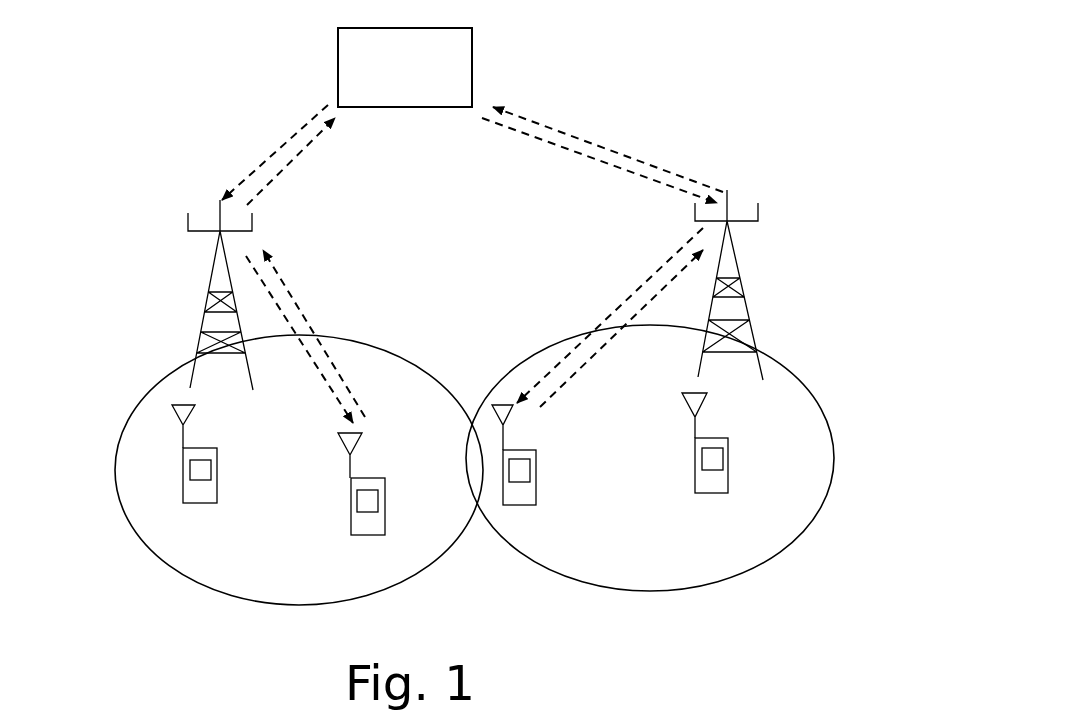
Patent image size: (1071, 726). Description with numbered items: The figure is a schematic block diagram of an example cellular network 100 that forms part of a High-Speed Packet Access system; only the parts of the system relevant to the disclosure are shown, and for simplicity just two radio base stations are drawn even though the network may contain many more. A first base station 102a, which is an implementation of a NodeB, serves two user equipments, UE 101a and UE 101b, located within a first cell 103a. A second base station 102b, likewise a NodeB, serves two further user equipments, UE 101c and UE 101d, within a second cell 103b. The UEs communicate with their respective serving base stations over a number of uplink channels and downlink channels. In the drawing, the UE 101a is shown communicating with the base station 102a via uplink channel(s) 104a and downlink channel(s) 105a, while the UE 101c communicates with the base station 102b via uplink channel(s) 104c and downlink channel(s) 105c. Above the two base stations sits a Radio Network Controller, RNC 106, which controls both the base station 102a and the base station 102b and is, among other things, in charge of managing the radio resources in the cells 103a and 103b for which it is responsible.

The cellular network 100 is at (642, 82).
The Radio Network Controller 106 is at (472, 60).
The base station 102a is at (187, 218).
The base station 102b is at (695, 207).
The cell 103a is at (218, 588).
The cell 103b is at (615, 583).
The UE 101a is at (373, 535).
The UE 101b is at (207, 505).
The UE 101c is at (525, 505).
The UE 101d is at (717, 493).
The uplink channel 104a is at (340, 396).
The downlink channel 105a is at (345, 421).
The uplink channel 104c is at (550, 402).
The downlink channel 105c is at (570, 370).